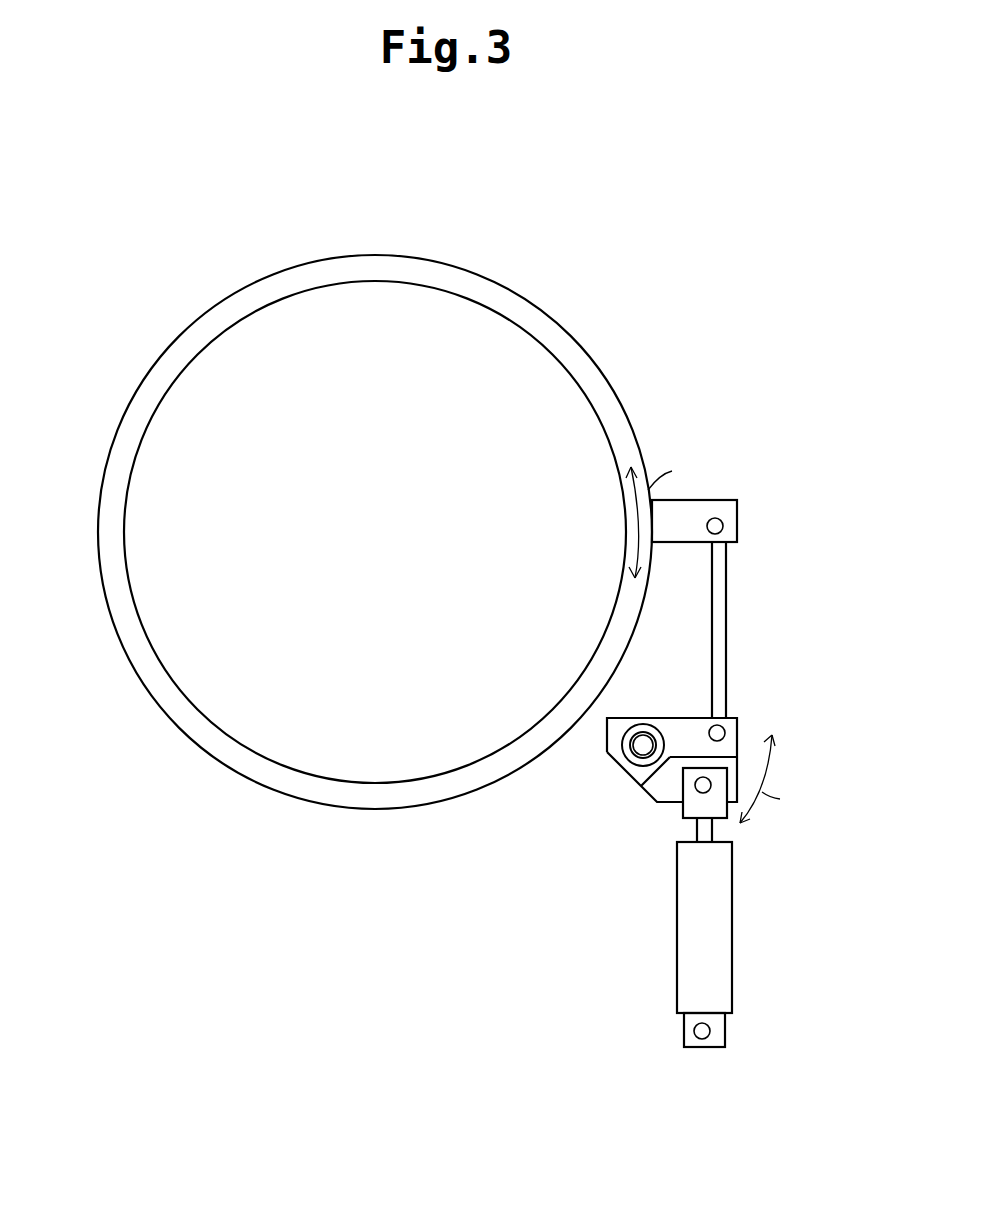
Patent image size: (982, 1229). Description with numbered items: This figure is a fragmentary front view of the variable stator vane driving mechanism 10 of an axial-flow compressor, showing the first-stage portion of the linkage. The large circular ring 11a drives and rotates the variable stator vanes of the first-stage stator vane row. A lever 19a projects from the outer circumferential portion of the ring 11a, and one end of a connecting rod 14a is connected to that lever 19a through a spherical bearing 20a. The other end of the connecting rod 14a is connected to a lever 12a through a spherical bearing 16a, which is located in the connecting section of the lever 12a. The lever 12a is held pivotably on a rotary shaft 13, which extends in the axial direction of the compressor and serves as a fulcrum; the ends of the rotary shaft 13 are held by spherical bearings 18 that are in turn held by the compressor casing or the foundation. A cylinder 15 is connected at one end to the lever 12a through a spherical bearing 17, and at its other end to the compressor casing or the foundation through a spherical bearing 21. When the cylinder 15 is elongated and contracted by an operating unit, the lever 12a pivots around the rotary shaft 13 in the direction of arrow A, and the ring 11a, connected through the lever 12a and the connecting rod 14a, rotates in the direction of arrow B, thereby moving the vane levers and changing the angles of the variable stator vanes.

The variable stator vane driving mechanism 10 is at (118, 342).
The ring 11a is at (607, 374).
The lever 19a is at (712, 500).
The spherical bearing 20a is at (723, 526).
The connecting rod 14a is at (732, 633).
The lever 12a is at (741, 738).
The spherical bearing 16a is at (727, 727).
The rotary shaft 13 is at (630, 752).
The spherical bearing 18 is at (632, 771).
The spherical bearing 17 is at (680, 806).
The cylinder 15 is at (734, 960).
The spherical bearing 21 is at (718, 1030).